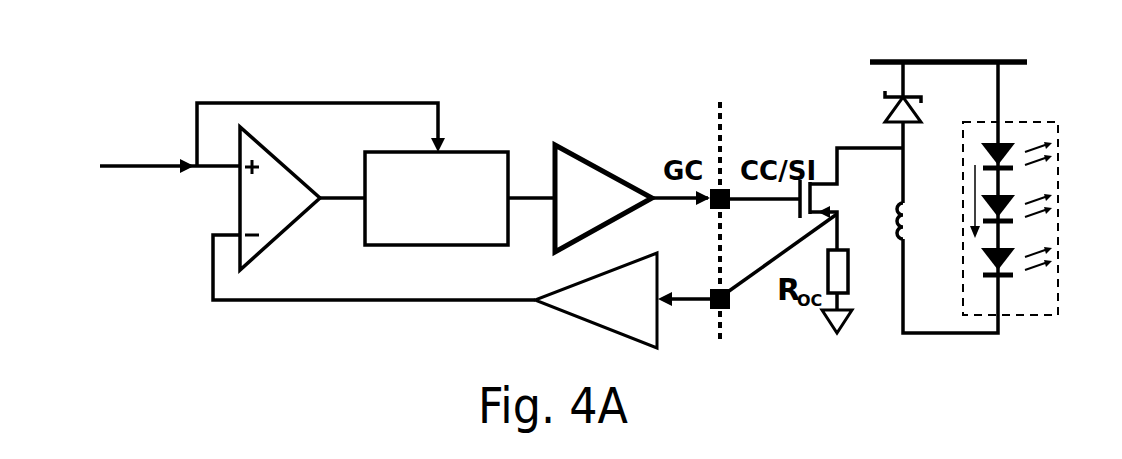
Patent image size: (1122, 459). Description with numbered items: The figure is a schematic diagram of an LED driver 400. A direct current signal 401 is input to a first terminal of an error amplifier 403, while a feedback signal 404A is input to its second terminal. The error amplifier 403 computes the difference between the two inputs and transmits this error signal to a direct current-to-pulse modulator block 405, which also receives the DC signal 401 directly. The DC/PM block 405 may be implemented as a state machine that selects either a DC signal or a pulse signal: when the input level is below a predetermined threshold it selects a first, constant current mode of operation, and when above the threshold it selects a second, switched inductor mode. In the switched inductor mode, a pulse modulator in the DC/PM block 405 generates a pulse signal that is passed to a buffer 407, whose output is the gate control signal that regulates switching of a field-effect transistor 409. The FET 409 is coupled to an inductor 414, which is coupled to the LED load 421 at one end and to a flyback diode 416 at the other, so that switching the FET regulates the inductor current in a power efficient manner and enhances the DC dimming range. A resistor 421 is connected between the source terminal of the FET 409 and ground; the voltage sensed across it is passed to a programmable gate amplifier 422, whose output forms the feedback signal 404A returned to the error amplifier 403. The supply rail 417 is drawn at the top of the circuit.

The LED driver 400 is at (112, 102).
The direct current (DC) signal 401 is at (128, 168).
The error amplifier 403 is at (272, 152).
The feedback signal 404A is at (298, 303).
The direct current-to-pulse modulator (DC/PM) block 405 is at (490, 150).
The buffer 407 is at (612, 158).
The field-effect-transistor (FET) 409 is at (798, 216).
The inductor 414 is at (910, 232).
The flyback diode 416 is at (912, 97).
The supply voltage rail 417 is at (998, 62).
The resistor (R_OC) 421 is at (1047, 122).
The programmable gate amplifier (PGA) 422 is at (540, 308).